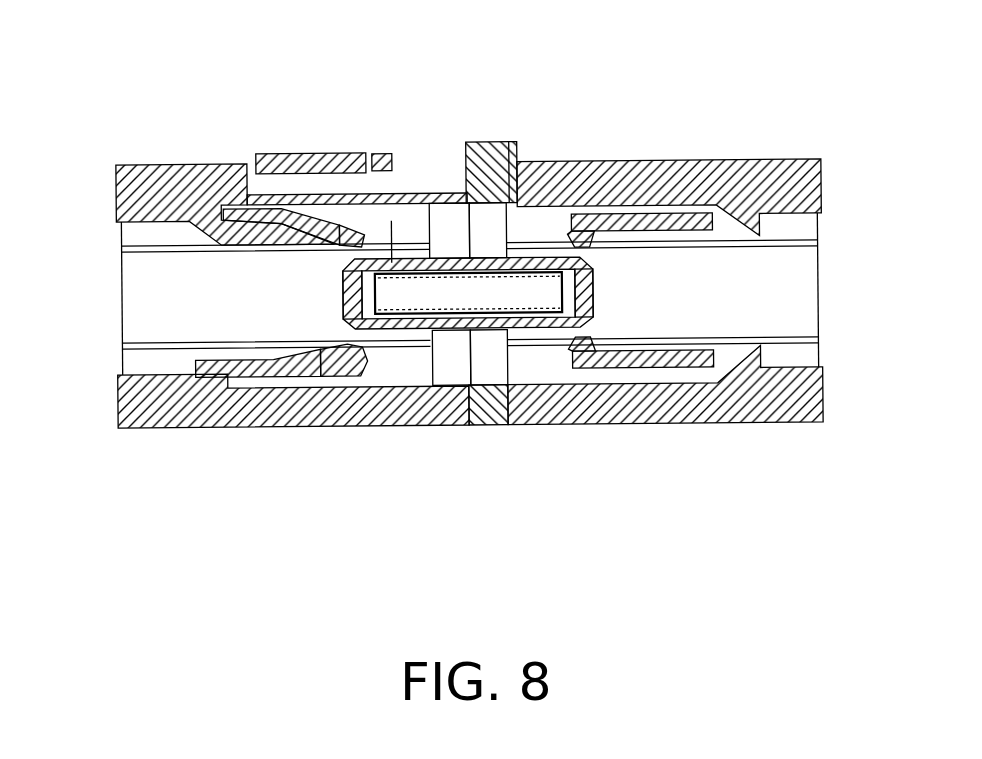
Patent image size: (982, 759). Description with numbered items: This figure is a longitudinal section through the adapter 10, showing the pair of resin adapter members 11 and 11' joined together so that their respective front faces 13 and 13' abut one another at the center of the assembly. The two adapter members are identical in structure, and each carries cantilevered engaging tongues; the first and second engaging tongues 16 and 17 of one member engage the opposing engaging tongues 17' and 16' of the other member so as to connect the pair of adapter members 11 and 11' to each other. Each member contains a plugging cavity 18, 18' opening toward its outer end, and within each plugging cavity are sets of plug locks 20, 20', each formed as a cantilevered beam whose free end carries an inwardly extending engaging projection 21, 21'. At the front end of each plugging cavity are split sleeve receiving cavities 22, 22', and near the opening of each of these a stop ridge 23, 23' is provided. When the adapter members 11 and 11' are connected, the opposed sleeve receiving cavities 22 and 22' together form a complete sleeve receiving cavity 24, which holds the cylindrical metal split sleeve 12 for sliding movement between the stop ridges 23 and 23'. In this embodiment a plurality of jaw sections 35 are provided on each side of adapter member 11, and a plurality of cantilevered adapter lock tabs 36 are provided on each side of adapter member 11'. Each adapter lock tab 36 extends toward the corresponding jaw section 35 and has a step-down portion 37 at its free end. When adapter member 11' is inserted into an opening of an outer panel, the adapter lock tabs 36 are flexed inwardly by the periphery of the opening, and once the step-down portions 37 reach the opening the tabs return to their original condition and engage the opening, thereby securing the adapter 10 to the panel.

The adapter 10 is at (489, 356).
The adapter member 11 is at (665, 354).
The adapter member 11' is at (293, 355).
The split sleeve 12 is at (453, 202).
The front face 13 is at (452, 428).
The front face 13' is at (543, 172).
The first cantilevered engaging tongue 16 is at (356, 125).
The engaging tongue 16' is at (453, 455).
The second cantilevered engaging tongue 17 is at (507, 466).
The engaging tongue 17' is at (462, 150).
The plugging cavity 18 is at (698, 292).
The plugging cavity 18' is at (230, 296).
The plug lock 20 is at (646, 313).
The plug lock 20' is at (267, 316).
The engaging projection 21 is at (713, 291).
The engaging projection 21' is at (258, 231).
The split sleeve receiving cavity 22 is at (733, 223).
The split sleeve receiving cavity 22' is at (360, 154).
The stop ridge 23 is at (628, 297).
The stop ridge 23' is at (229, 217).
The complete sleeve receiving cavity 24 is at (390, 329).
The jaw section 35 is at (505, 160).
The adapter lock tab 36 is at (333, 151).
The step-down portion 37 is at (387, 152).